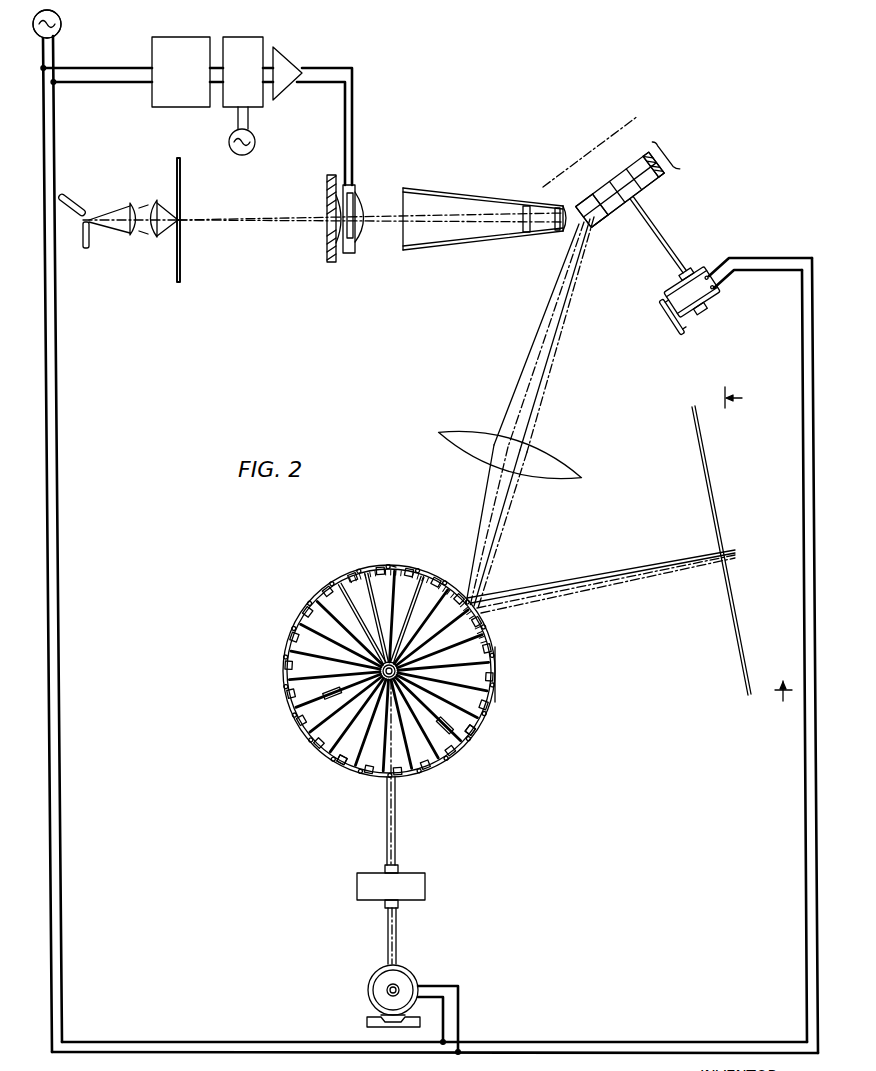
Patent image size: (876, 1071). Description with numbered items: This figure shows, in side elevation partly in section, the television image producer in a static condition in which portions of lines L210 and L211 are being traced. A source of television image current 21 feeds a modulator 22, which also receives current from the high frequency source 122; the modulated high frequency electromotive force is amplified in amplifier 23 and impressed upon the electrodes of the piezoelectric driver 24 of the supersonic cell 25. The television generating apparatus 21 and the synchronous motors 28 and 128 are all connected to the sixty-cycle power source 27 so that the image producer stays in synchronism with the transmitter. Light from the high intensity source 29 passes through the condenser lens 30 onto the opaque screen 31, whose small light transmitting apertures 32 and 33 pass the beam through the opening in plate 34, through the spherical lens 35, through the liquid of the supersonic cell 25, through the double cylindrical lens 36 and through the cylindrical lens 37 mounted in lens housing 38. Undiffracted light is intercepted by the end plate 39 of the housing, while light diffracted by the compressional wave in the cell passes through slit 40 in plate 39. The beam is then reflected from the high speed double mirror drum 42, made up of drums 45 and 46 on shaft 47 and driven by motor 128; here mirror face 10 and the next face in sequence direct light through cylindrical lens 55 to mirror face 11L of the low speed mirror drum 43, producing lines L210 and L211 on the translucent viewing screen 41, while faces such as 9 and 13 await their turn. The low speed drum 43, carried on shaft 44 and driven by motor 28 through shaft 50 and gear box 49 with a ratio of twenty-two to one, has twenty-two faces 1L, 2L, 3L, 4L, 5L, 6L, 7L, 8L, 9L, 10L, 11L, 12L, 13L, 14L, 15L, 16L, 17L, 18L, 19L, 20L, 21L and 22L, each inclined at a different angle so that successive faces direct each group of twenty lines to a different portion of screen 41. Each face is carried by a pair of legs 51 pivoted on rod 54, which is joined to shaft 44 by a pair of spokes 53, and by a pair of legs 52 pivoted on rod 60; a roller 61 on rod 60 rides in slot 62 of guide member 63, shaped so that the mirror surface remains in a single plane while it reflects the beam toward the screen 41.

The rod 60 is at (60, 20).
The 60-cycle power source 27 is at (47, 24).
The source of television image current 21 is at (188, 24).
The modulator 22 is at (252, 24).
The amplifier 23 is at (286, 56).
The high frequency source 122 is at (234, 152).
The high intensity light source 29 is at (78, 210).
The condenser lens 30 is at (141, 234).
The opaque screen 31 is at (176, 277).
The light transmitting aperture 32 is at (180, 220).
The light transmitting aperture 33 is at (178, 220).
The plate 34 is at (329, 175).
The spherical lens 35 is at (339, 245).
The piezoelectric driver 24 is at (352, 190).
The supersonic cell 25 is at (350, 254).
The double cylindrical lens 36 is at (366, 243).
The lens housing 38 is at (456, 246).
The cylindrical lens 37 is at (526, 232).
The end plate 39 is at (558, 231).
The slit 40 is at (563, 206).
The mirror face 9 is at (636, 115).
The high speed double mirror drum 42 is at (668, 157).
The mirror drum 45 is at (643, 157).
The mirror drum 46 is at (650, 186).
The mirror face 10 is at (591, 226).
The shaft 47 is at (656, 238).
The synchronous motor 128 is at (713, 297).
The image line L210 is at (522, 382).
The image line L211 is at (539, 402).
The cylindrical lens 55 is at (574, 475).
The translucent viewing screen 41 is at (700, 450).
The mirror face 13 is at (760, 544).
The low speed mirror drum 43 is at (270, 635).
The shaft 44 is at (400, 669).
The mirror face 1L is at (337, 768).
The mirror face 2L is at (366, 779).
The mirror face 3L is at (399, 780).
The mirror face 4L is at (430, 774).
The mirror face 5L is at (457, 759).
The mirror face 6L is at (477, 735).
The mirror face 7L is at (492, 708).
The mirror face 8L is at (498, 677).
The mirror face 9L is at (496, 649).
The mirror face 10L is at (486, 621).
The mirror face 11L is at (468, 600).
The mirror face 12L is at (440, 575).
The mirror face 13L is at (411, 564).
The mirror face 14L is at (380, 562).
The mirror face 15L is at (350, 569).
The mirror face 16L is at (323, 584).
The mirror face 17L is at (301, 606).
The mirror face 18L is at (286, 633).
The mirror face 19L is at (280, 665).
The mirror face 20L is at (282, 695).
The mirror face 21L is at (293, 724).
The mirror face 22L is at (312, 749).
The roller 61 is at (394, 562).
The slot 62 is at (416, 576).
The legs 52 is at (350, 580).
The legs 51 is at (370, 582).
The spokes 53 is at (332, 692).
The rod 54 is at (492, 722).
The guide member 63 is at (355, 760).
The gear box 49 is at (427, 887).
The shaft 50 is at (398, 947).
The synchronous motor 28 is at (368, 995).